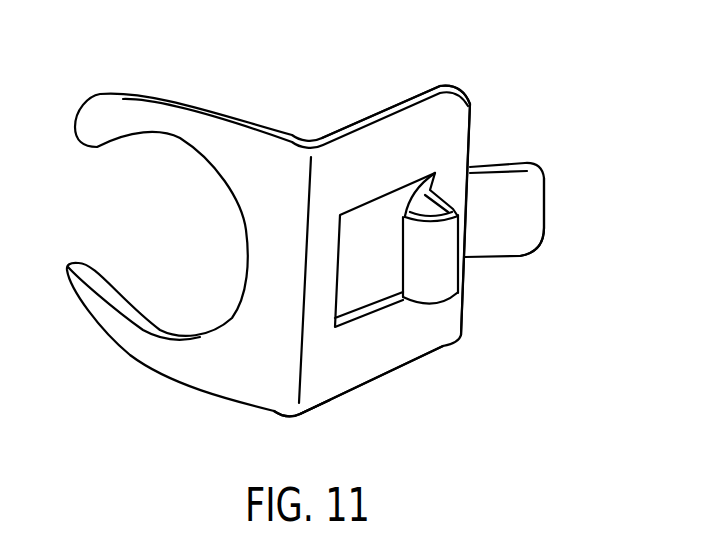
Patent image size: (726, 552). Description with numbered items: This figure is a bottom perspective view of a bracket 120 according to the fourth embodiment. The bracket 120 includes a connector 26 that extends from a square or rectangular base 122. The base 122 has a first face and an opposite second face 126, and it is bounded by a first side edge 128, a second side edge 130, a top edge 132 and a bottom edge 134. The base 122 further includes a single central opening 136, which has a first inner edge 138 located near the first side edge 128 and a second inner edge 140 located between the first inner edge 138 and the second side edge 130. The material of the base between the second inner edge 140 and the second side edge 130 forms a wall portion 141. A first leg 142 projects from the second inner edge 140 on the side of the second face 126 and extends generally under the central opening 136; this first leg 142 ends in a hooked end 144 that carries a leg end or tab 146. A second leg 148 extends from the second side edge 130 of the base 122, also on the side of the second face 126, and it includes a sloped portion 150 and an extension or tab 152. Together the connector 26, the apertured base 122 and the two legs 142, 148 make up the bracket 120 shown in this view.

The bracket 120 is at (284, 92).
The connector 26 is at (205, 370).
The first side edge 128 is at (320, 138).
The bottom edge 134 is at (415, 97).
The second face 126 is at (450, 127).
The central opening 136 is at (363, 258).
The first inner edge 138 is at (338, 293).
The second side edge 130 is at (463, 310).
The hooked end 144 is at (432, 292).
The leg end or tab 146 is at (410, 213).
The second inner edge 140 is at (440, 183).
The first leg 142 is at (410, 197).
The wall portion 141 is at (465, 267).
The second leg 148 is at (530, 183).
The extension or tab 152 is at (540, 213).
The sloped portion 150 is at (503, 240).
The base 122 is at (397, 370).
The top edge 132 is at (350, 397).